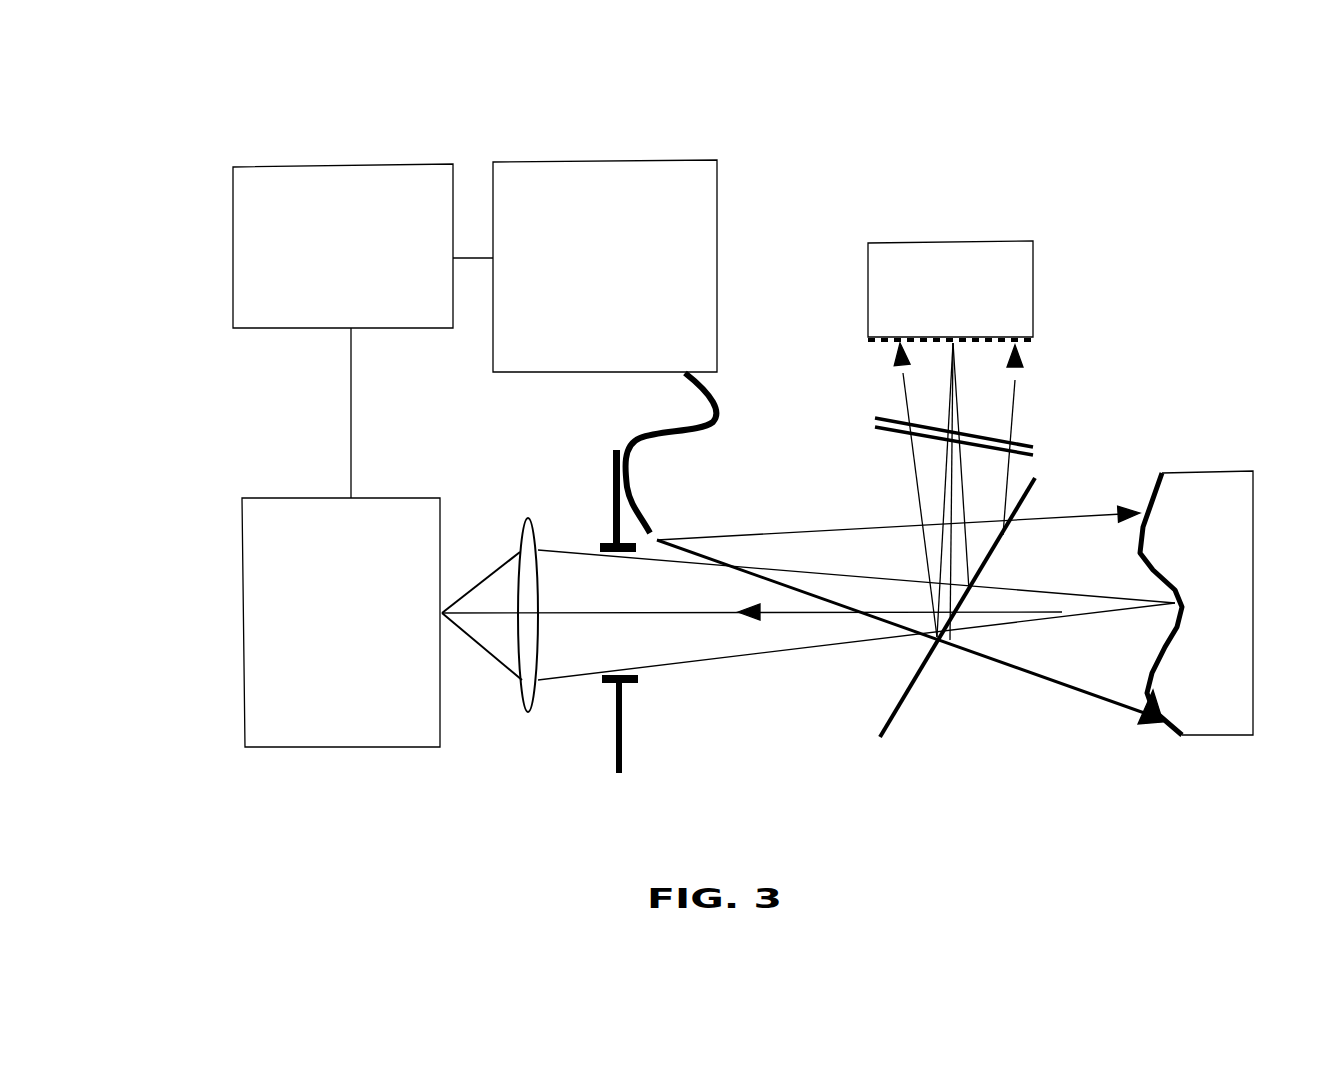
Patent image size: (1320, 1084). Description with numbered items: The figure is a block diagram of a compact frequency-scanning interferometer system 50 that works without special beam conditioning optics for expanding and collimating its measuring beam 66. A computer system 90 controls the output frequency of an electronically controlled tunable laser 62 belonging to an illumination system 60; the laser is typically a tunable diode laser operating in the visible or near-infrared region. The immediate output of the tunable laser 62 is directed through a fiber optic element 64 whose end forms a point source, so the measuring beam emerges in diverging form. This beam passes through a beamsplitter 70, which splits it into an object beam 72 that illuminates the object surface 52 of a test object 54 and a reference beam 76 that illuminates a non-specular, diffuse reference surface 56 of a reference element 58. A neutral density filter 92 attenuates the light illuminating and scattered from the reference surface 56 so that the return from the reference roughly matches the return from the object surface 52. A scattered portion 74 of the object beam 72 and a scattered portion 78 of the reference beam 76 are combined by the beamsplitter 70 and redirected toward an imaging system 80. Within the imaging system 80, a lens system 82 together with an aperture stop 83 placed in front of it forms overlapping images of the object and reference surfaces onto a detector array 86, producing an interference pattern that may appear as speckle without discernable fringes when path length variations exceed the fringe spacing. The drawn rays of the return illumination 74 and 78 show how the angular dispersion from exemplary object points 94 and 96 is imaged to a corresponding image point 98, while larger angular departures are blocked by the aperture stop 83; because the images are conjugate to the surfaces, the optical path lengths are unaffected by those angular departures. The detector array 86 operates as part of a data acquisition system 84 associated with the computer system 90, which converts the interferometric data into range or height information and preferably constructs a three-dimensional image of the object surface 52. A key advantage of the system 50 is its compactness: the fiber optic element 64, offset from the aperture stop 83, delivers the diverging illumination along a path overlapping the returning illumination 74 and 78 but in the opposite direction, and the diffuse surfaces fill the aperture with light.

The frequency-scanning interferometer system 50 is at (452, 116).
The object surface 52 is at (1143, 677).
The test object 54 is at (1193, 559).
The reference surface 56 is at (875, 343).
The reference element 58 is at (942, 292).
The illumination system 60 is at (732, 201).
The tunable laser 62 is at (595, 281).
The fiber optic element 64 is at (640, 527).
The measuring beam 66 is at (860, 528).
The beamsplitter 70 is at (913, 675).
The object beam 72 is at (965, 653).
The scattered portion of the object beam 74 is at (1018, 590).
The reference beam 76 is at (1018, 410).
The scattered portion of the reference beam 78 is at (952, 422).
The imaging system 80 is at (512, 504).
The lens system 82 is at (532, 707).
The aperture stop 83 is at (610, 670).
The data acquisition system 84 is at (228, 570).
The detector array 86 is at (333, 632).
The computer system 90 is at (328, 266).
The neutral density filter 92 is at (1037, 452).
The object point 94 is at (1175, 607).
The object point 96 is at (957, 348).
The image point 98 is at (448, 627).